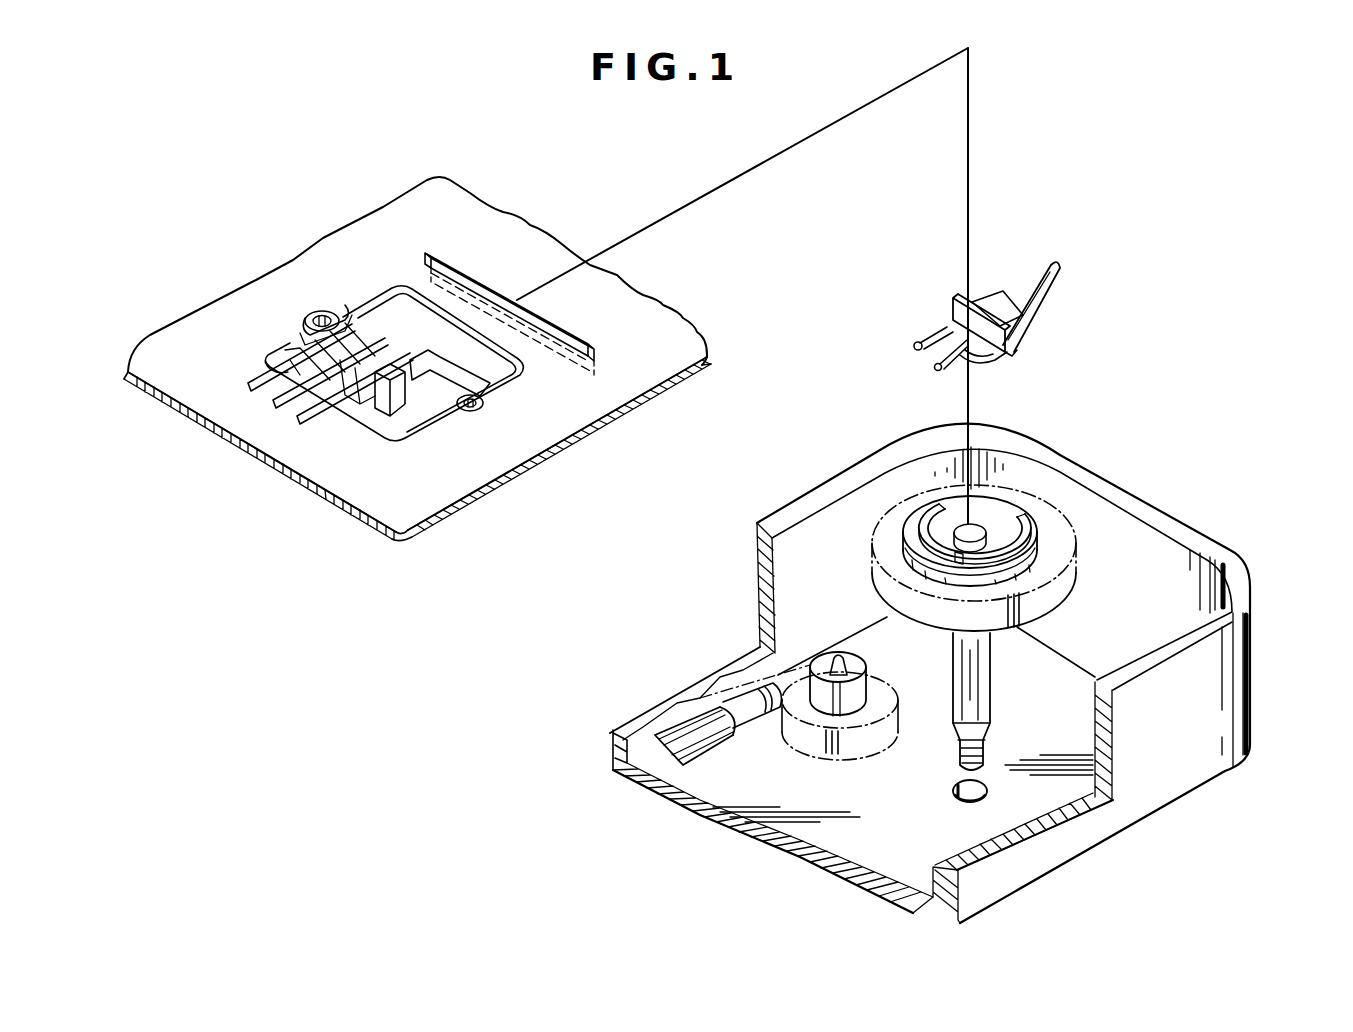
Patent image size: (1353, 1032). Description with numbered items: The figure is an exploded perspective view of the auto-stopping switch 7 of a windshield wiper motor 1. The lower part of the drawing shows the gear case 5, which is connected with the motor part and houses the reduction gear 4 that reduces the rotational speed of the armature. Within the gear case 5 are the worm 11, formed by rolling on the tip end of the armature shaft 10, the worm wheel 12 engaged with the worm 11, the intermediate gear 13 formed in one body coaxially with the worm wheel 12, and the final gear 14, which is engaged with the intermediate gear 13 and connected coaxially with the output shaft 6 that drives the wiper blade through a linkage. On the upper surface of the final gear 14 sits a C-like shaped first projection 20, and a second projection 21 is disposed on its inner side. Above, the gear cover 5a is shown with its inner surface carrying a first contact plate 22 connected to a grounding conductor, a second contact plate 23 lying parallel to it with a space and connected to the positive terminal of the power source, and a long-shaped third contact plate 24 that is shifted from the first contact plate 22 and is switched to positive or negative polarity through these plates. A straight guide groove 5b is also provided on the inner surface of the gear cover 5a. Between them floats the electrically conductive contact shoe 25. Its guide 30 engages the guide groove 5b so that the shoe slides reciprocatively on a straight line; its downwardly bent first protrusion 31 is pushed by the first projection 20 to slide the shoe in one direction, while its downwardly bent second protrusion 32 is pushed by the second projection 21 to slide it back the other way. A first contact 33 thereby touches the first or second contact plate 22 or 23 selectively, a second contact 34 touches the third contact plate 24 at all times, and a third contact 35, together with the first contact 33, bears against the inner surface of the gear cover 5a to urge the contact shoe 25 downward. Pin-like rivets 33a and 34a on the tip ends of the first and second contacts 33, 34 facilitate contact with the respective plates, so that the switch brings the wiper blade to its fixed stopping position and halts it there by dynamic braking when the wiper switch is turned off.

The windshield wiper motor 1 is at (1130, 352).
The reduction gear 4 is at (912, 733).
The gear case 5 is at (1138, 492).
The gear cover 5a is at (506, 470).
The guide groove 5b is at (580, 333).
The output shaft 6 is at (991, 692).
The auto-stopping switch 7 is at (895, 401).
The armature shaft 10 is at (707, 750).
The worm 11 is at (748, 728).
The worm wheel 12 is at (906, 710).
The intermediate gear 13 is at (876, 668).
The final gear 14 is at (1078, 582).
The first projection 20 is at (1030, 517).
The second projection 21 is at (905, 536).
The first contact plate 22 is at (382, 358).
The second contact plate 23 is at (347, 313).
The third contact plate 24 is at (505, 388).
The contact shoe 25 is at (1035, 318).
The guide 30 is at (1015, 350).
The first protrusion 31 is at (1022, 300).
The second protrusion 32 is at (975, 364).
The first contact 33 is at (928, 362).
The rivet 33a is at (937, 372).
The second contact 34 is at (924, 328).
The rivet 34a is at (910, 343).
The third contact 35 is at (1058, 268).